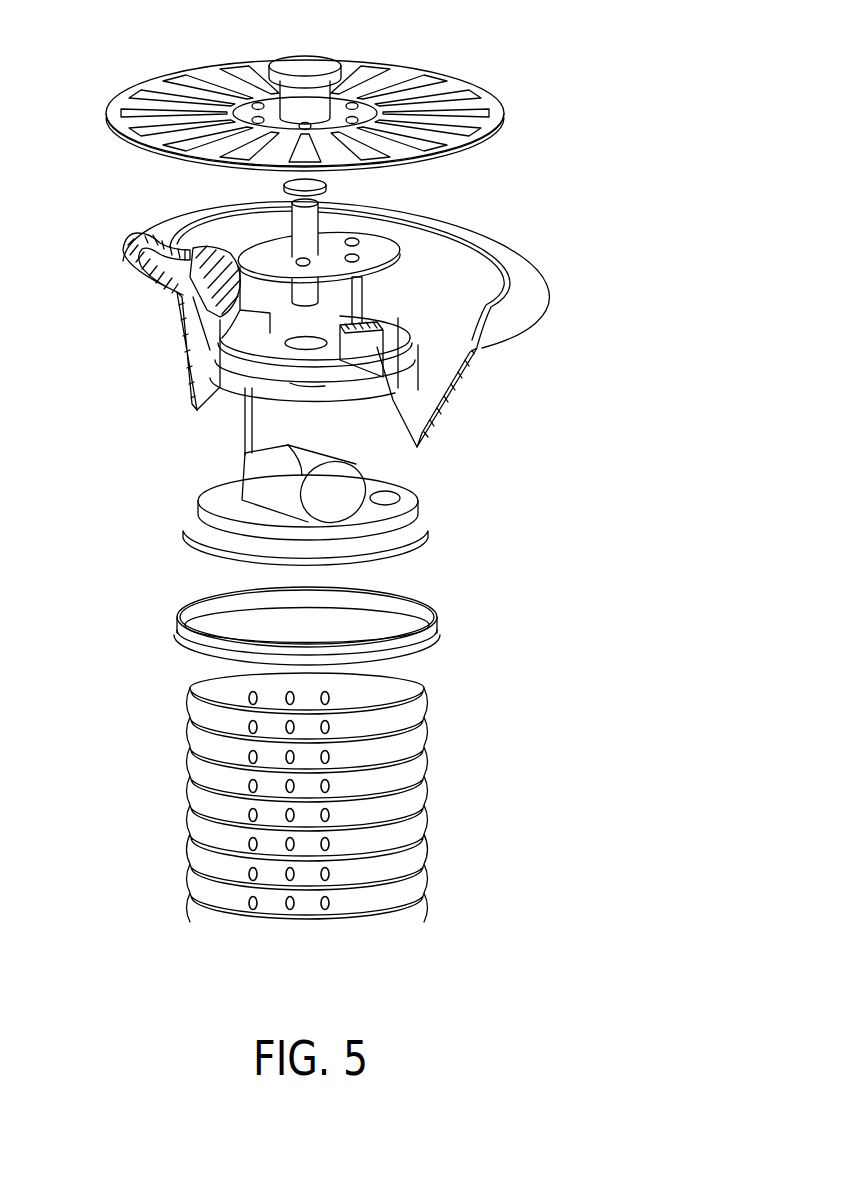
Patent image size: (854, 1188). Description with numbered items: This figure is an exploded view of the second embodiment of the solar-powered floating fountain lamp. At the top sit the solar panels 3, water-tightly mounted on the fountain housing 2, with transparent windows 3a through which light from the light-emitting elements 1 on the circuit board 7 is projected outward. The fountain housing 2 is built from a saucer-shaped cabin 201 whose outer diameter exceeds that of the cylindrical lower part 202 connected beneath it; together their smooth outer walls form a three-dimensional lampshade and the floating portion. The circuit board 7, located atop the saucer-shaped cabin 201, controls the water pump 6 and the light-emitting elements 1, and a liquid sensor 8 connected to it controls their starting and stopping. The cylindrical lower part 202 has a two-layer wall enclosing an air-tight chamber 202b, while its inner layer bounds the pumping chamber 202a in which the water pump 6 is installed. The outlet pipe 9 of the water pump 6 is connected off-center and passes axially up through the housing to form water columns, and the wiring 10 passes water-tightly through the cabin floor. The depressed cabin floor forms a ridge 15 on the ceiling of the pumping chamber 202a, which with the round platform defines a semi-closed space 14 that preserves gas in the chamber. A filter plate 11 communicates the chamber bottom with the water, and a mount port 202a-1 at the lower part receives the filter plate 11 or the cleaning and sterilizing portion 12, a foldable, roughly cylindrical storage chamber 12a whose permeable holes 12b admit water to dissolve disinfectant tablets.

The light-emitting element 1 is at (363, 233).
The fountain housing 2 is at (95, 211).
The solar panel 3 is at (417, 80).
The transparent window 3a is at (243, 73).
The water pump 6 is at (240, 470).
The circuit board 7 is at (487, 237).
The liquid sensor 8 is at (502, 255).
The outlet pipe 9 is at (282, 233).
The wiring 10 is at (245, 424).
The filter plate 11 is at (210, 513).
The cleaning and sterilizing portion 12 is at (287, 746).
The storage chamber 12a is at (318, 626).
The permeable hole 12b is at (370, 753).
The semi-closed space 14 is at (433, 390).
The ridge 15 is at (430, 393).
The saucer-shaped cabin 201 is at (540, 289).
The cylindrical lower part 202 is at (452, 363).
The pumping chamber 202a is at (310, 360).
The mount port 202a-1 is at (290, 383).
The chamber 202b is at (207, 347).